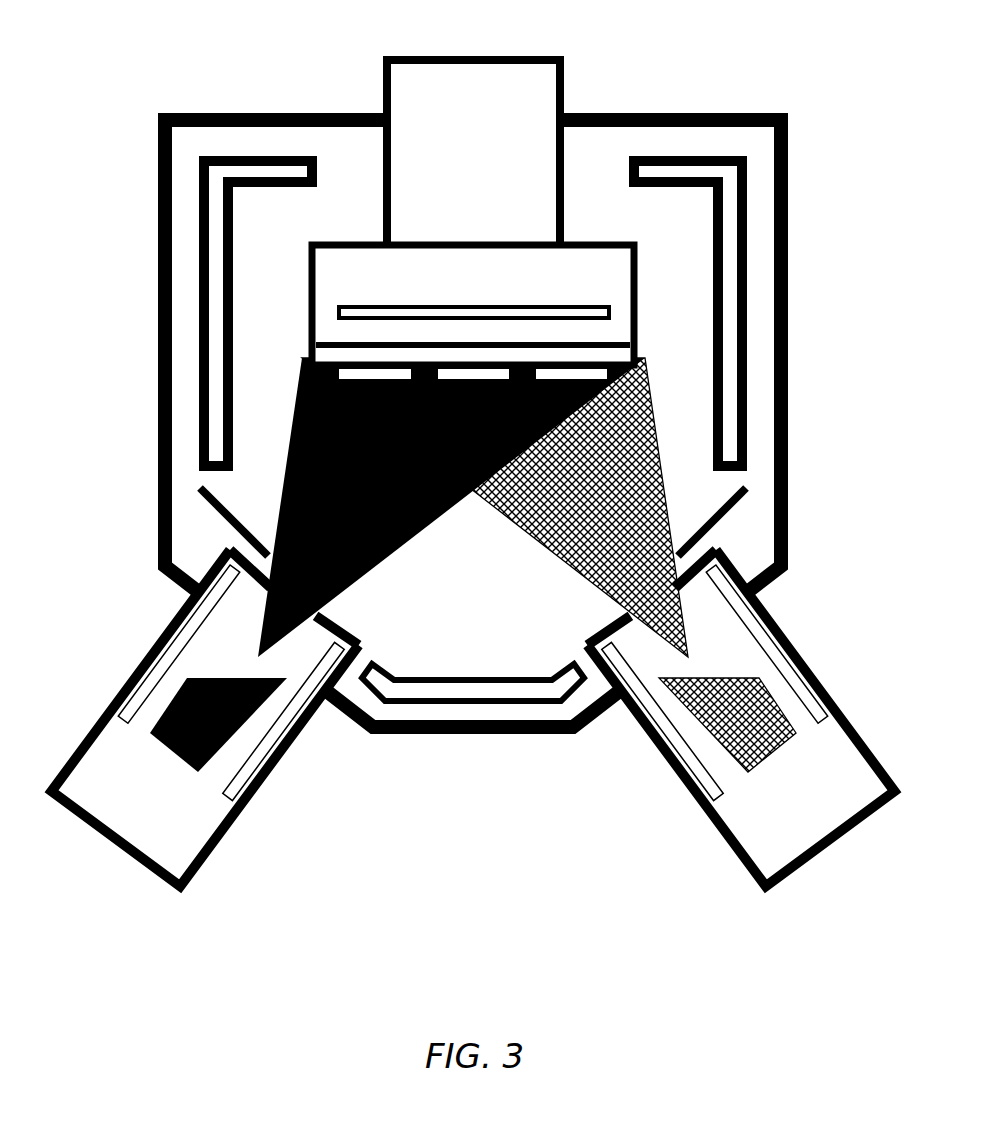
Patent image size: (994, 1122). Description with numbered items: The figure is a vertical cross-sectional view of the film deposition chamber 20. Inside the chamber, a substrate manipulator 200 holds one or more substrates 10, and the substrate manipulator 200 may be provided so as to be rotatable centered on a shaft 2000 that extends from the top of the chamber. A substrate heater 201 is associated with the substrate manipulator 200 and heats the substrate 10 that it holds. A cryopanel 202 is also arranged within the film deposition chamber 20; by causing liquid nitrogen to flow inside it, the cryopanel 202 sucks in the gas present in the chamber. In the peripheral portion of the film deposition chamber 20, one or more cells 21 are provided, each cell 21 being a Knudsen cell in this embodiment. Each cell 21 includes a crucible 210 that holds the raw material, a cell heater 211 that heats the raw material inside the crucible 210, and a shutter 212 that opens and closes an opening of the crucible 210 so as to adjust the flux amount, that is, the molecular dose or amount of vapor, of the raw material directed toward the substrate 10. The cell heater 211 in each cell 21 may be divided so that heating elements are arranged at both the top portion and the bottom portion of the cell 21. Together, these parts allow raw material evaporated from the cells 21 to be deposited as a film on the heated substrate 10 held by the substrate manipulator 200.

The substrate 10 is at (398, 366).
The film deposition chamber 20 is at (268, 112).
The substrate manipulator 200 is at (352, 240).
The substrate heater 201 is at (344, 303).
The cryopanel 202 is at (252, 188).
The cell 21 is at (181, 885).
The crucible 210 is at (151, 736).
The cell heater 211 is at (121, 719).
The shutter 212 is at (241, 522).
The shaft 2000 is at (405, 58).